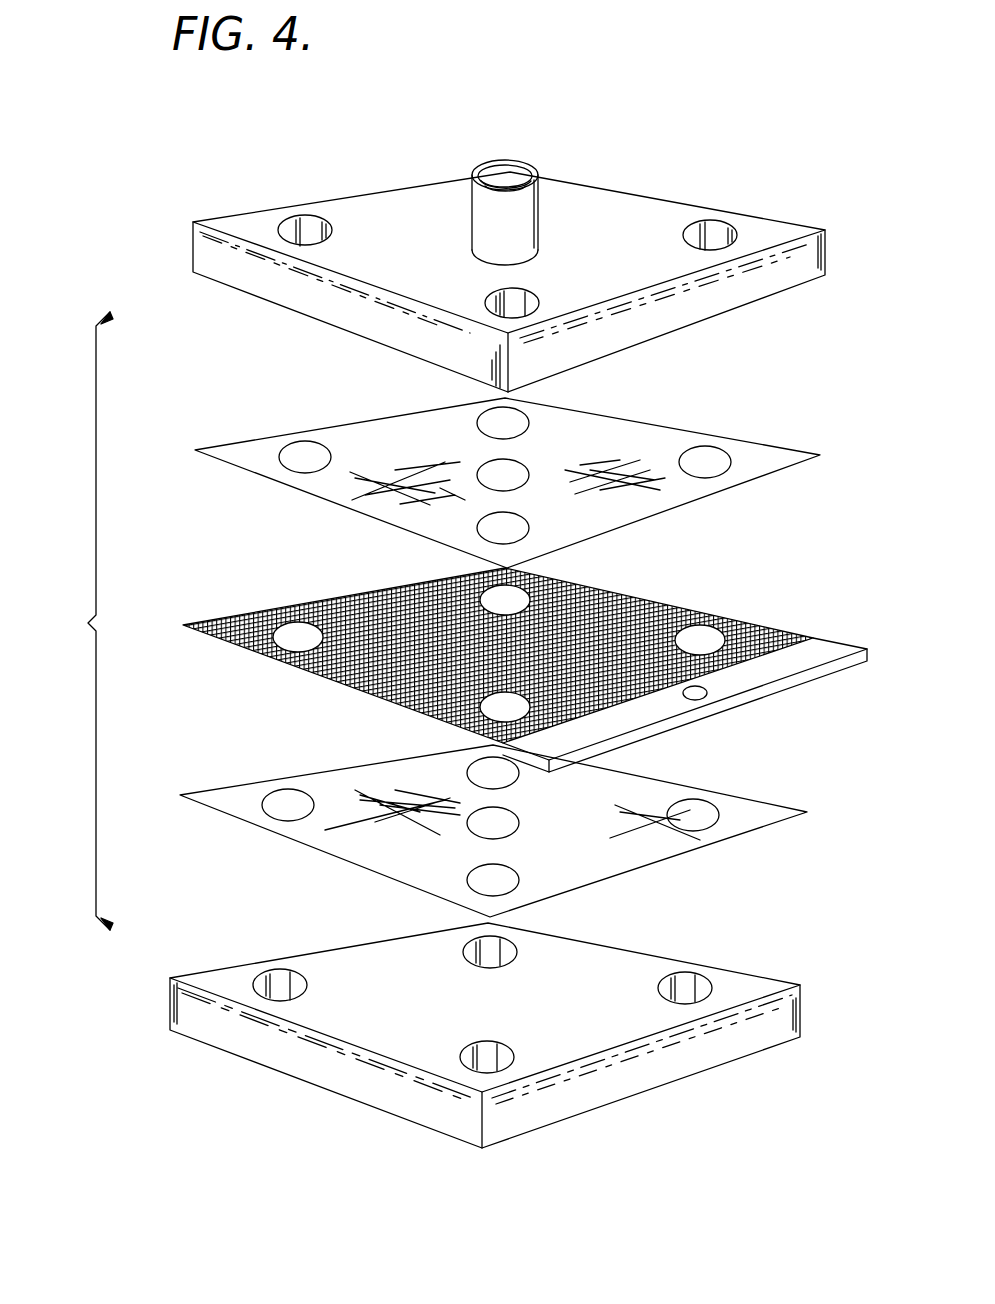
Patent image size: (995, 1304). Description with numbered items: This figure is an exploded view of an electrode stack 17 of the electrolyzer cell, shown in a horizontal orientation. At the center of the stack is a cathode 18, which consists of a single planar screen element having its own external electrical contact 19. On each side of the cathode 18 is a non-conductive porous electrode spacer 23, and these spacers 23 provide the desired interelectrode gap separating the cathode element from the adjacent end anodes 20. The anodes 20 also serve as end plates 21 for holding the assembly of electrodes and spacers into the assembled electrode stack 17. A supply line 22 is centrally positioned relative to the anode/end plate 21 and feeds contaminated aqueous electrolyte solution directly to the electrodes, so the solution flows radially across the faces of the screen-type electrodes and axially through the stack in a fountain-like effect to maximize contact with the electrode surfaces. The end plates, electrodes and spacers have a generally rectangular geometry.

The electrode stack 17 is at (62, 644).
The cathode 18 is at (787, 630).
The external electrical contact 19 is at (830, 668).
The anode 20 is at (770, 297).
The end plate 21 is at (768, 232).
The supply line 22 is at (523, 161).
The electrode spacer 23 is at (760, 450).